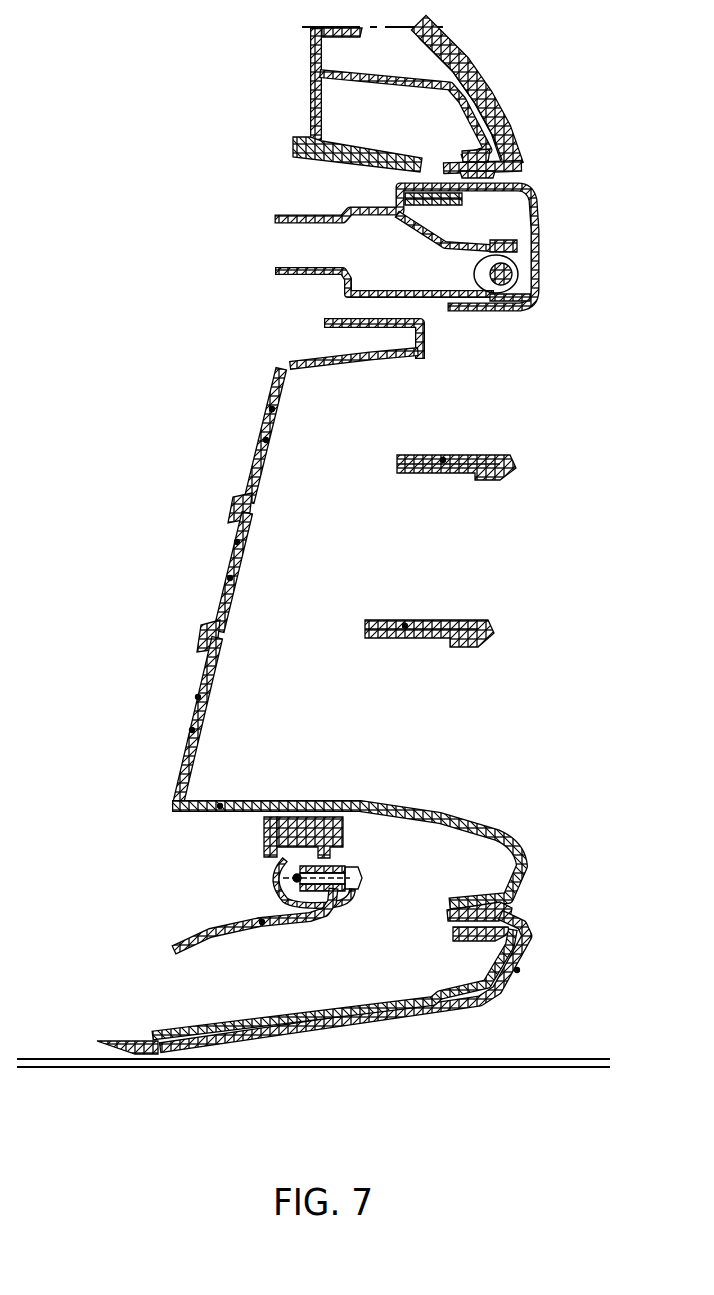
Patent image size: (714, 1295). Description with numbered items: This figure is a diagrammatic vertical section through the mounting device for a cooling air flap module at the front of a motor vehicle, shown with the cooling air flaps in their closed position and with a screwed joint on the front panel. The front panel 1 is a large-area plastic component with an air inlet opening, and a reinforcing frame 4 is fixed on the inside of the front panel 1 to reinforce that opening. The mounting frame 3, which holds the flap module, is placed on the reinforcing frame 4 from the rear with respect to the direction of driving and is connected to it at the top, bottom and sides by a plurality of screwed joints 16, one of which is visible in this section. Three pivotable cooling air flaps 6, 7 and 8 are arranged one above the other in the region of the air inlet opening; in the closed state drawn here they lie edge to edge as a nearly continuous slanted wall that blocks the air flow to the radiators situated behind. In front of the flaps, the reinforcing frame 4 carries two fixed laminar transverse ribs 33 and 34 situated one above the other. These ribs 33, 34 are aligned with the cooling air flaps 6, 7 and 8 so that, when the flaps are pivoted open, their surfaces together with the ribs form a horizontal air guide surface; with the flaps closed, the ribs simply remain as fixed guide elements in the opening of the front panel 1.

The front panel 1 is at (517, 970).
The mounting frame 3 is at (210, 810).
The reinforcing frame 4 is at (262, 922).
The cooling air flap 6 is at (268, 410).
The cooling air flap 7 is at (238, 542).
The cooling air flap 8 is at (198, 697).
The screwed joint 16 is at (283, 878).
The transverse rib 33 is at (443, 458).
The transverse rib 34 is at (405, 625).